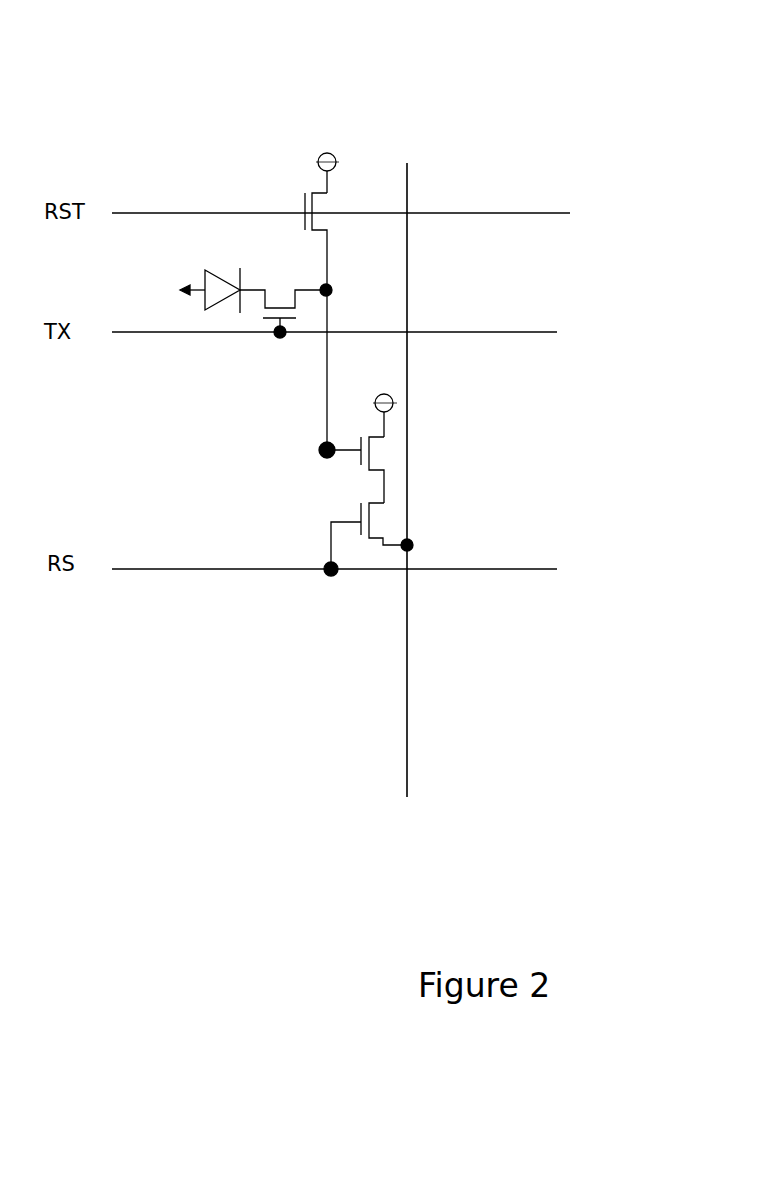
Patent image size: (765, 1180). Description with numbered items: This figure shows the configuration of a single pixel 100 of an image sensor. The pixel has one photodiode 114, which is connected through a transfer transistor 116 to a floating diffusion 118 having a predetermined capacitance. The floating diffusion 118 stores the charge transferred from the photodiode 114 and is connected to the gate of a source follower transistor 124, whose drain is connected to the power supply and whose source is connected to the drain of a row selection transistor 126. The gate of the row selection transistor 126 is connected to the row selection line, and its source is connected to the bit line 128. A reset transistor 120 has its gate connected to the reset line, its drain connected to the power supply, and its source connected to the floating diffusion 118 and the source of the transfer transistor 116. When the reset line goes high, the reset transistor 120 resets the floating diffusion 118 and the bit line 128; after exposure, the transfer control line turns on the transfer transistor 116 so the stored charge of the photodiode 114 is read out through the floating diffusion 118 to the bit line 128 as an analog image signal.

The pixel 100 is at (218, 145).
The photodiode 114 is at (205, 268).
The transfer transistor 116 is at (288, 302).
The floating diffusion 118 is at (320, 447).
The reset transistor 120 is at (300, 198).
The source follower transistor 124 is at (380, 450).
The row selection transistor 126 is at (380, 520).
The bit line 128 is at (407, 650).